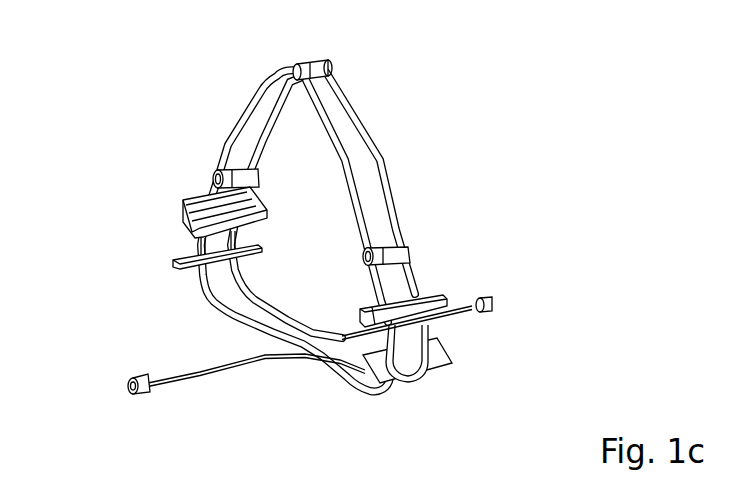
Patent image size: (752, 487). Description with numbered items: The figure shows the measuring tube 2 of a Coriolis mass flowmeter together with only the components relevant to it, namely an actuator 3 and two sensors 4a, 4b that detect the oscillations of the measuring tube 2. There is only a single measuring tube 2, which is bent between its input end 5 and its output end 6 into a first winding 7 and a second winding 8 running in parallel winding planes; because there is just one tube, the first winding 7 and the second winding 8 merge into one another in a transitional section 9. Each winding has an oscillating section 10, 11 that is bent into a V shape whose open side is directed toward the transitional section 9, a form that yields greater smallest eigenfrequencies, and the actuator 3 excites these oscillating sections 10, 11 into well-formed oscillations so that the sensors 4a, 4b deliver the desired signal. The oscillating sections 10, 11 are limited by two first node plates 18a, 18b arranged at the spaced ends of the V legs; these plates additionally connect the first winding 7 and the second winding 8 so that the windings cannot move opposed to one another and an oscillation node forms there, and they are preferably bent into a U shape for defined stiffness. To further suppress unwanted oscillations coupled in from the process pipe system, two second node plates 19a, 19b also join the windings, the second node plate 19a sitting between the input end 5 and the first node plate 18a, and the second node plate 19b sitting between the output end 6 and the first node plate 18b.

The measuring tube 2 is at (378, 140).
The actuator 3 is at (322, 66).
The sensor 4a is at (203, 168).
The sensor 4b is at (410, 248).
The input end 5 is at (128, 380).
The output end 6 is at (495, 300).
The first winding 7 is at (248, 107).
The second winding 8 is at (292, 72).
The transitional section 9 is at (247, 337).
The oscillating section 10 is at (507, 156).
The oscillating section 11 is at (417, 193).
The first node plate 18a is at (187, 200).
The first node plate 18b is at (437, 295).
The second node plate 19a is at (177, 261).
The second node plate 19b is at (460, 357).